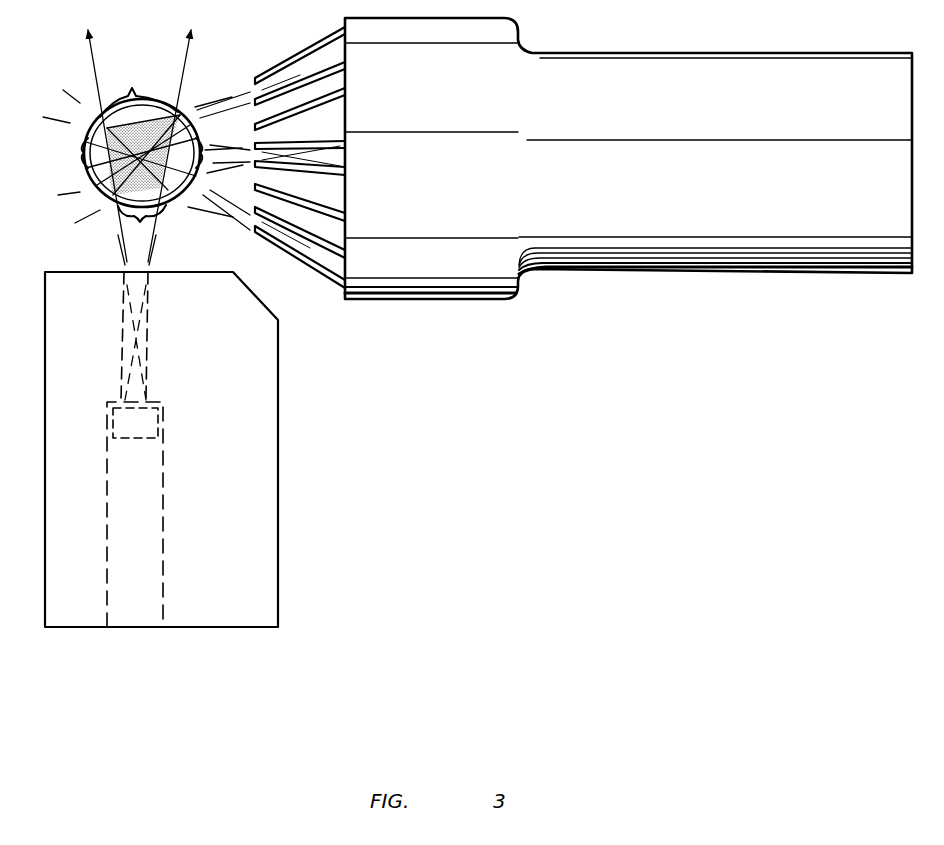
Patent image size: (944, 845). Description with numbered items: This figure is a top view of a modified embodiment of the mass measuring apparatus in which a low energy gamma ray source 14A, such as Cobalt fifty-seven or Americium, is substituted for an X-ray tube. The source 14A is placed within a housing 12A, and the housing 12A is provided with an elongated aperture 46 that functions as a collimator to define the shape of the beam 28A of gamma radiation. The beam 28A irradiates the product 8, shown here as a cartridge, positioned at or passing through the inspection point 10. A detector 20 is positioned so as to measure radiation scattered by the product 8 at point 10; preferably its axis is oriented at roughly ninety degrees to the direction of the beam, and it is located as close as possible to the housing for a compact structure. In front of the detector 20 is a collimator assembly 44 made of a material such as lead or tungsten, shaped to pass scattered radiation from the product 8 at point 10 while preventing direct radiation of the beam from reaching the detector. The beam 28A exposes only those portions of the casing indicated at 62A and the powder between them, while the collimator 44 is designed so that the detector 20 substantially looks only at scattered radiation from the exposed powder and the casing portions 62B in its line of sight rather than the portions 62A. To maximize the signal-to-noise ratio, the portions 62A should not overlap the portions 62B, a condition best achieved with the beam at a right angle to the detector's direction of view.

The product 8 is at (132, 166).
The inspection point 10 is at (178, 116).
The housing 12A is at (279, 416).
The low energy gamma ray source 14A is at (166, 428).
The detector 20 is at (722, 193).
The beam 28A is at (120, 242).
The collimator assembly 44 is at (312, 48).
The elongated aperture 46 is at (149, 332).
The casing portions exposed to the beam 62A is at (162, 232).
The casing portions in the detector's line of sight 62B is at (78, 155).